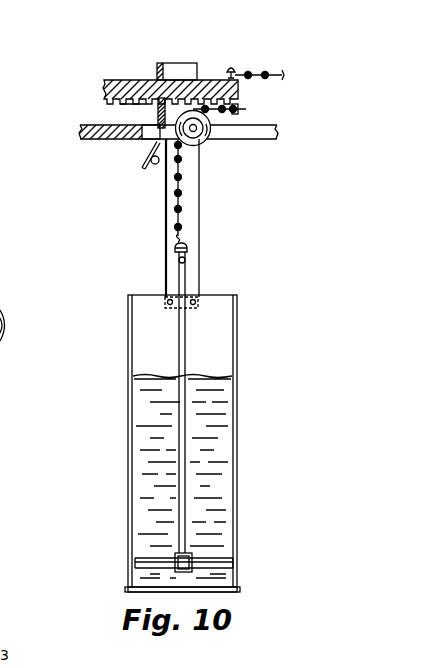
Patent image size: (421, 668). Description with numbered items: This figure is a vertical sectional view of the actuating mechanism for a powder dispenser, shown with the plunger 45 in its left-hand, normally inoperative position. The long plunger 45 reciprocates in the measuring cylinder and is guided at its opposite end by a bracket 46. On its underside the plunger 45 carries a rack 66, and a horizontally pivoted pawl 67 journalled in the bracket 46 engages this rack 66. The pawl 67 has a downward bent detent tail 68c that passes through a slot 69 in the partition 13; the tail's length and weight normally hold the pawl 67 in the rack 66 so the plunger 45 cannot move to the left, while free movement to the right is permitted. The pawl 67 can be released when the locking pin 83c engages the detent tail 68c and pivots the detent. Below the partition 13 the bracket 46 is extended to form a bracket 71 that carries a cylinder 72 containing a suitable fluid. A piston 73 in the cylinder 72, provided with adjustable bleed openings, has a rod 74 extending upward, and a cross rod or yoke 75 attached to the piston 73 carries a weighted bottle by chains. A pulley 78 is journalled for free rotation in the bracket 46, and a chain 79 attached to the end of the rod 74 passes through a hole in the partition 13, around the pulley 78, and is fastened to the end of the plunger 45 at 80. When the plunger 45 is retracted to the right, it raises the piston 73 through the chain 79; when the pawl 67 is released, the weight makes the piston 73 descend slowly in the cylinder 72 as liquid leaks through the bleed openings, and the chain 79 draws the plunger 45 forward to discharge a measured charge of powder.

The partition 13 is at (258, 134).
The plunger 45 is at (121, 81).
The bracket 46 is at (182, 63).
The rack 66 is at (141, 102).
The pawl 67 is at (161, 112).
The detent tail 68c is at (145, 168).
The slot 69 is at (142, 138).
The bracket 71 is at (199, 185).
The cylinder 72 is at (128, 342).
The piston 73 is at (213, 557).
The rod 74 is at (187, 362).
The yoke 75 is at (186, 258).
The pulley 78 is at (202, 139).
The chain 79 is at (182, 210).
The chain attachment point 80 is at (246, 109).
The locking pin 83c is at (155, 164).